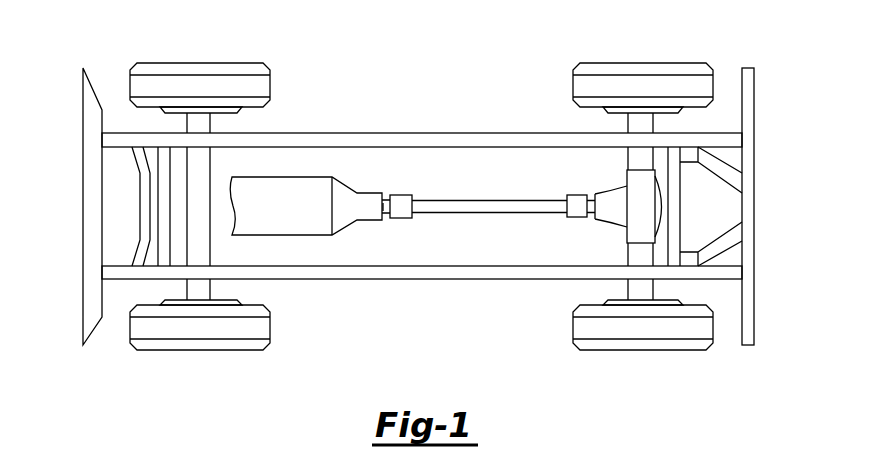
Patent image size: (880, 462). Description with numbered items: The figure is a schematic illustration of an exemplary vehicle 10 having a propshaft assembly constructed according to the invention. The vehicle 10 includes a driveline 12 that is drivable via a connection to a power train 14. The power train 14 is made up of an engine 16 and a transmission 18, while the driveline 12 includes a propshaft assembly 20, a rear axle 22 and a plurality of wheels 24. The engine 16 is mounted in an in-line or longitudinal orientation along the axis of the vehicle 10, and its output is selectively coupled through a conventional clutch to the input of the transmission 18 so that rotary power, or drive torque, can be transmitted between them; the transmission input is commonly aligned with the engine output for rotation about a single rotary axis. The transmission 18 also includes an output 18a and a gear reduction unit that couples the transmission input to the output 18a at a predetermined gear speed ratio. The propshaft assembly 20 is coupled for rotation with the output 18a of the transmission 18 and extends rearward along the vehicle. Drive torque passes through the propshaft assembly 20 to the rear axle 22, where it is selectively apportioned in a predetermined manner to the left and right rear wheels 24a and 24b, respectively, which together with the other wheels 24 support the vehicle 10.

The vehicle 10 is at (376, 74).
The driveline 12 is at (588, 186).
The power train 14 is at (291, 254).
The engine 16 is at (273, 216).
The transmission 18 is at (345, 185).
The output 18a is at (384, 213).
The propshaft assembly 20 is at (500, 199).
The rear axle 22 is at (614, 236).
The wheels 24 is at (175, 356).
The left rear wheel 24a is at (580, 325).
The right rear wheel 24b is at (577, 85).